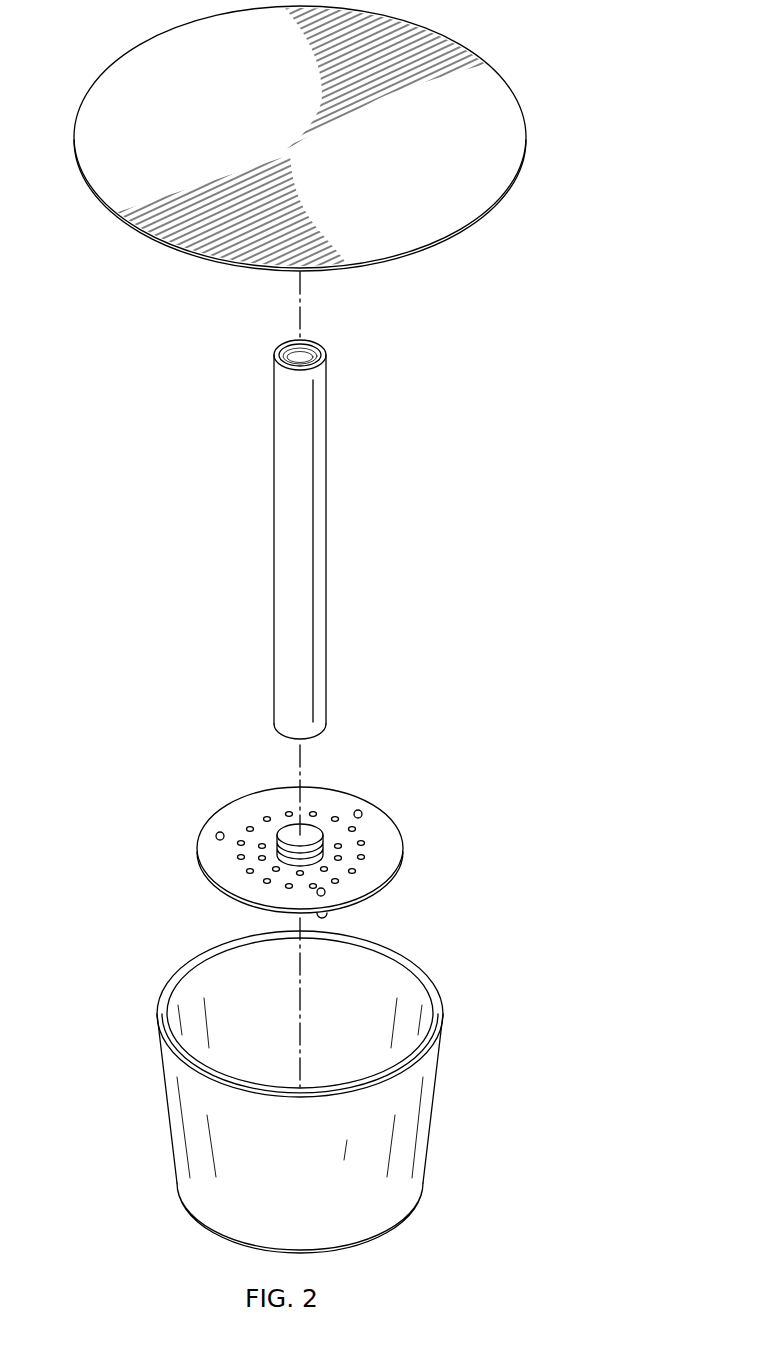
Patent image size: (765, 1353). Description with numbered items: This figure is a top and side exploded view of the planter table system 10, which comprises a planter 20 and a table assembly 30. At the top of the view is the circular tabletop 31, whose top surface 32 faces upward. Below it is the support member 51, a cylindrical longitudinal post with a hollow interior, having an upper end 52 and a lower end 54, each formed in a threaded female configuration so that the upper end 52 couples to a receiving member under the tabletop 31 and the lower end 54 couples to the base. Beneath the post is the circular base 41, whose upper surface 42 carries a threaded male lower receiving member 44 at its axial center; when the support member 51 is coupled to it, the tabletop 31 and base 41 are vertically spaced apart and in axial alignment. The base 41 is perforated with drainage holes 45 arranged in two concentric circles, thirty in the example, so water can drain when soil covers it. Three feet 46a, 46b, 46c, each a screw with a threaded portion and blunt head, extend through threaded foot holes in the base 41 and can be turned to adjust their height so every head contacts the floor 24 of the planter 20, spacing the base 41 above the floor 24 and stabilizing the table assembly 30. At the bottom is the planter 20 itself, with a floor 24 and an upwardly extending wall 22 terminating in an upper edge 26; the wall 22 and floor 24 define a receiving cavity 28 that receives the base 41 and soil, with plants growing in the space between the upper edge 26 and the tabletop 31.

The planter table system 10 is at (561, 294).
The planter 20 is at (167, 1101).
The wall 22 is at (436, 1098).
The floor 24 is at (396, 1222).
The upper edge 26 is at (442, 1014).
The receiving cavity 28 is at (268, 1008).
The table assembly 30 is at (164, 452).
The tabletop 31 is at (530, 118).
The top surface 32 is at (106, 84).
The base 41 is at (203, 885).
The upper surface 42 is at (394, 851).
The lower receiving member 44 is at (306, 826).
The drainage holes 45 is at (273, 811).
The foot 46a is at (362, 813).
The foot 46b is at (217, 835).
The foot 46c is at (327, 894).
The support member 51 is at (272, 535).
The upper end 52 is at (282, 345).
The lower end 54 is at (322, 740).